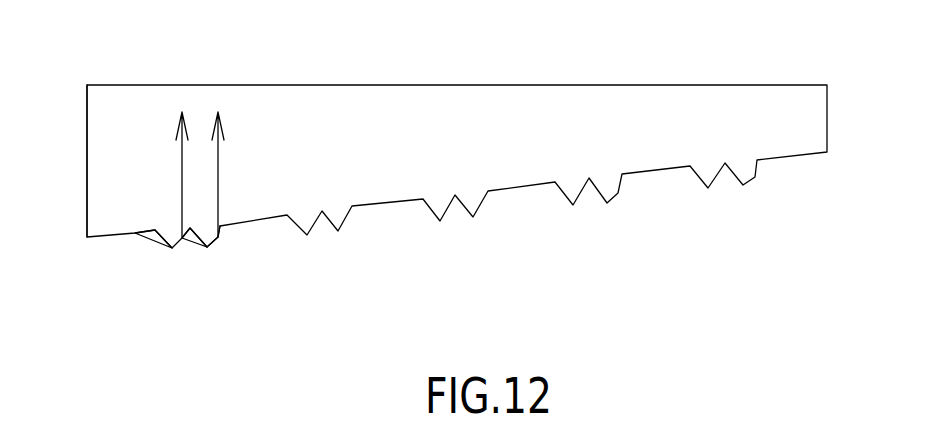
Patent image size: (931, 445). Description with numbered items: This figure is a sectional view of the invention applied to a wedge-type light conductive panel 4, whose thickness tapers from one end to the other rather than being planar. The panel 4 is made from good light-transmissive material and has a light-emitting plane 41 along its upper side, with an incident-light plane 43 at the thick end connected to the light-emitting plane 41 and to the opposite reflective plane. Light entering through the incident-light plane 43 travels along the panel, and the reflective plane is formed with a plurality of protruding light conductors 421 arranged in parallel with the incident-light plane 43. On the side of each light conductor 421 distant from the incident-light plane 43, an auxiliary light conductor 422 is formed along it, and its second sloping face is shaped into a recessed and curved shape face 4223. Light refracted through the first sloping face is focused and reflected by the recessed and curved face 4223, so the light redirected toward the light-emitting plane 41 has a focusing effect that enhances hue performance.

The light conductive panel 4 is at (440, 157).
The light-emitting plane 41 is at (688, 84).
The incident-light plane 43 is at (87, 142).
The light conductor 421 is at (165, 248).
The auxiliary light conductor 422 is at (217, 245).
The recessed and curved shape face 4223 is at (218, 237).